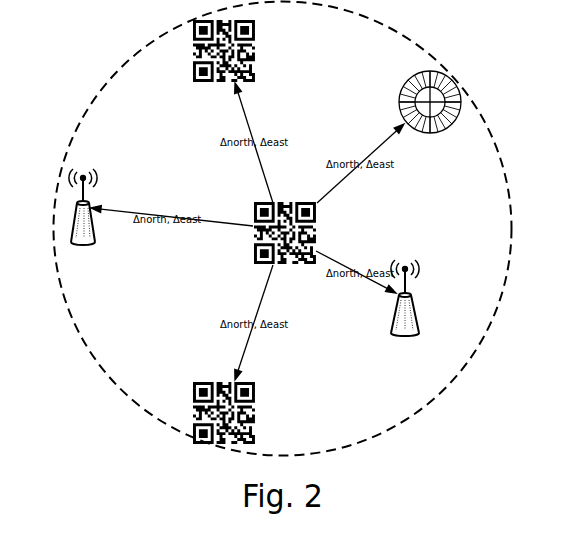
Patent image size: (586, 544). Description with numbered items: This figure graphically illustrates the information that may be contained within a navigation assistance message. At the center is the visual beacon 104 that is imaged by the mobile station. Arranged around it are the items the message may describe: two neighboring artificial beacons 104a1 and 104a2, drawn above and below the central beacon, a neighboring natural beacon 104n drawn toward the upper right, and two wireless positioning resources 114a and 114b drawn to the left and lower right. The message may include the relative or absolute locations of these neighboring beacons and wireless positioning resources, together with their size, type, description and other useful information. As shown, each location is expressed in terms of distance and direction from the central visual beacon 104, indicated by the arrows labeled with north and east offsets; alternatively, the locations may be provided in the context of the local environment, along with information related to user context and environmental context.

The visual beacon 104 is at (316, 240).
The neighboring artificial beacon 104a1 is at (255, 52).
The neighboring artificial beacon 104a2 is at (256, 415).
The neighboring natural beacon 104n is at (399, 100).
The wireless positioning resource 114a is at (96, 240).
The wireless positioning resource 114b is at (417, 323).